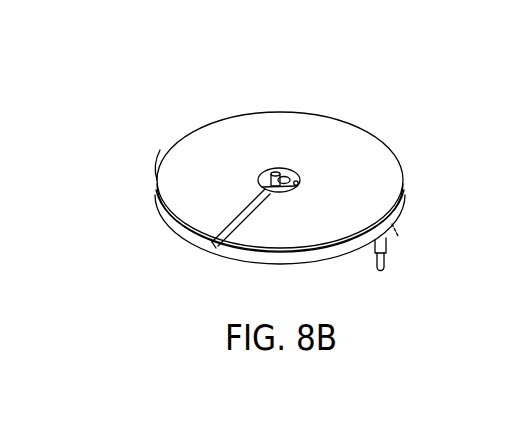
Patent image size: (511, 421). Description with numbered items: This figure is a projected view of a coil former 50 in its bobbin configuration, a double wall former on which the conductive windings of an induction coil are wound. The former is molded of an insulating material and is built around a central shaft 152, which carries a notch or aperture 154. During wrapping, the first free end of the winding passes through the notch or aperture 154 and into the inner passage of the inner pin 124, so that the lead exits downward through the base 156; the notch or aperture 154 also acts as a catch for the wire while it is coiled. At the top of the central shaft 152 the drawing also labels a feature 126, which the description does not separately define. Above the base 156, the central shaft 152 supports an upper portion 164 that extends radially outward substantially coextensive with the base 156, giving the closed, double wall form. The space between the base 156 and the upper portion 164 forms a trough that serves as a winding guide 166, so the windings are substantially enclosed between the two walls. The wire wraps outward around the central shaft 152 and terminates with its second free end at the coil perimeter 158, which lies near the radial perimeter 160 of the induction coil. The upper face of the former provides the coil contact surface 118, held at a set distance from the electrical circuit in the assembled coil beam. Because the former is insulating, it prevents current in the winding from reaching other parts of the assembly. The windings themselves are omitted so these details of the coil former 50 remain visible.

The coil former 50 is at (157, 78).
The coil contact surface 118 is at (373, 168).
The inner pin 124 is at (387, 262).
The central opening 126 is at (284, 172).
The central shaft 152 is at (300, 173).
The notch or aperture 154 is at (264, 192).
The base 156 is at (183, 238).
The coil perimeter 158 is at (394, 228).
The radial perimeter 160 is at (160, 211).
The upper portion 164 is at (175, 173).
The winding guide 166 is at (218, 251).